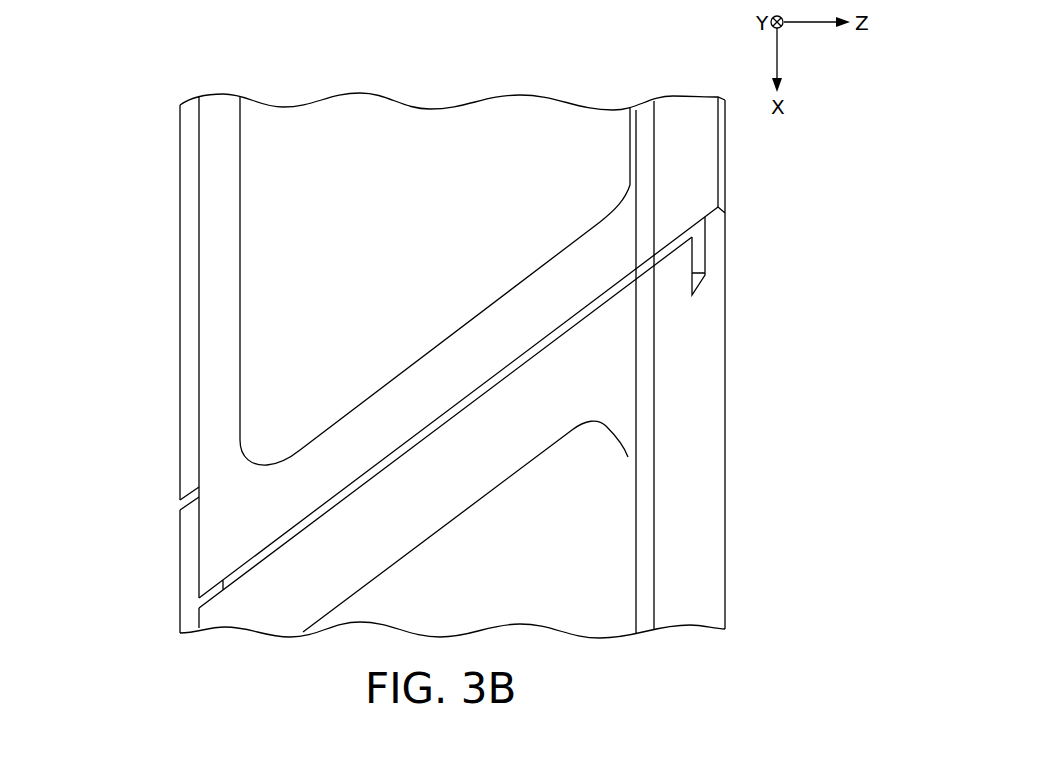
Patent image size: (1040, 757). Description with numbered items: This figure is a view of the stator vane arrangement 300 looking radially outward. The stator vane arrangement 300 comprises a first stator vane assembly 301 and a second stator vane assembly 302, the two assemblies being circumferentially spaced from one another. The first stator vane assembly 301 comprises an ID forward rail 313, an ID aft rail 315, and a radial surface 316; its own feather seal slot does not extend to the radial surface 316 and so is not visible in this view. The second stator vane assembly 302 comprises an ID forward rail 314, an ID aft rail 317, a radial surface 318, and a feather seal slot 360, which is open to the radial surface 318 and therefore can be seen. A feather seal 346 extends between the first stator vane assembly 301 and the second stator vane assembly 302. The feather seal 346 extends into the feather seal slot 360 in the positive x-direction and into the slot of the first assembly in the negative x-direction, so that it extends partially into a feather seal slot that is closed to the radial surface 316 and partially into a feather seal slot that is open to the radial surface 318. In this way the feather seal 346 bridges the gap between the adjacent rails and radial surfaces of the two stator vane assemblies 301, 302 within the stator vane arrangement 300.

The stator vane arrangement 300 is at (134, 56).
The first stator vane assembly 301 is at (341, 364).
The second stator vane assembly 302 is at (753, 365).
The ID forward rail 313 is at (218, 366).
The ID forward rail 314 is at (216, 618).
The ID aft rail 315 is at (722, 164).
The radial surface 316 is at (706, 150).
The ID aft rail 317 is at (717, 531).
The radial surface 318 is at (708, 450).
The feather seal 346 is at (695, 259).
The feather seal slot 360 is at (707, 238).